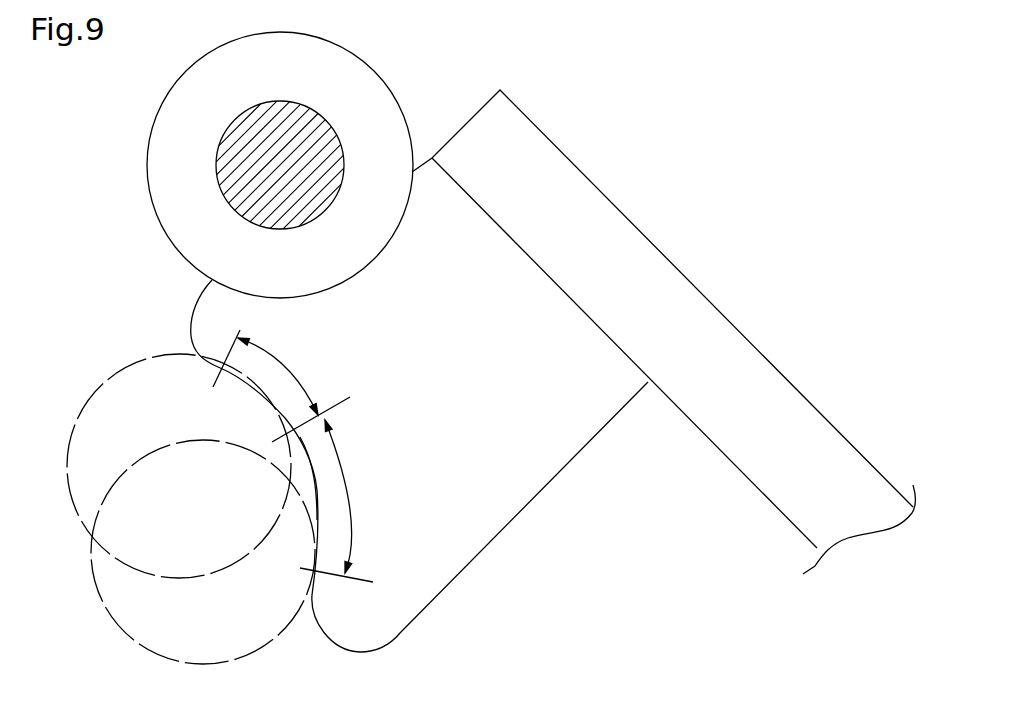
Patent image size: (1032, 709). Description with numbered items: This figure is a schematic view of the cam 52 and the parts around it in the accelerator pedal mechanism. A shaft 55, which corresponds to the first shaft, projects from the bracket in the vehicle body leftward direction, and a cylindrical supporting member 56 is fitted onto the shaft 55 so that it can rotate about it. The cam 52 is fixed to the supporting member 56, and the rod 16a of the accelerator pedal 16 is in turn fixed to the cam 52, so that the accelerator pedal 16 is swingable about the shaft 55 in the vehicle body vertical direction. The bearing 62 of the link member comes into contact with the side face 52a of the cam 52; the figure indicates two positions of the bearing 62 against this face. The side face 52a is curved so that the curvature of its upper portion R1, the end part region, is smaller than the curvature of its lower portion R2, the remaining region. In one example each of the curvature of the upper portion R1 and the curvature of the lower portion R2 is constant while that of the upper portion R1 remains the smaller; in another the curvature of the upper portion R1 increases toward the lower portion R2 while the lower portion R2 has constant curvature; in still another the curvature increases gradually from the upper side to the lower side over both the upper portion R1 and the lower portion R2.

The shaft 55 is at (223, 157).
The cylindrical supporting member 56 is at (157, 189).
The rod 16a is at (733, 348).
The accelerator pedal 16 is at (664, 332).
The cam 52 is at (518, 488).
The side face 52a is at (317, 485).
The bearing 62 is at (108, 380).
The upper portion R1 is at (282, 366).
The lower portion R2 is at (350, 497).